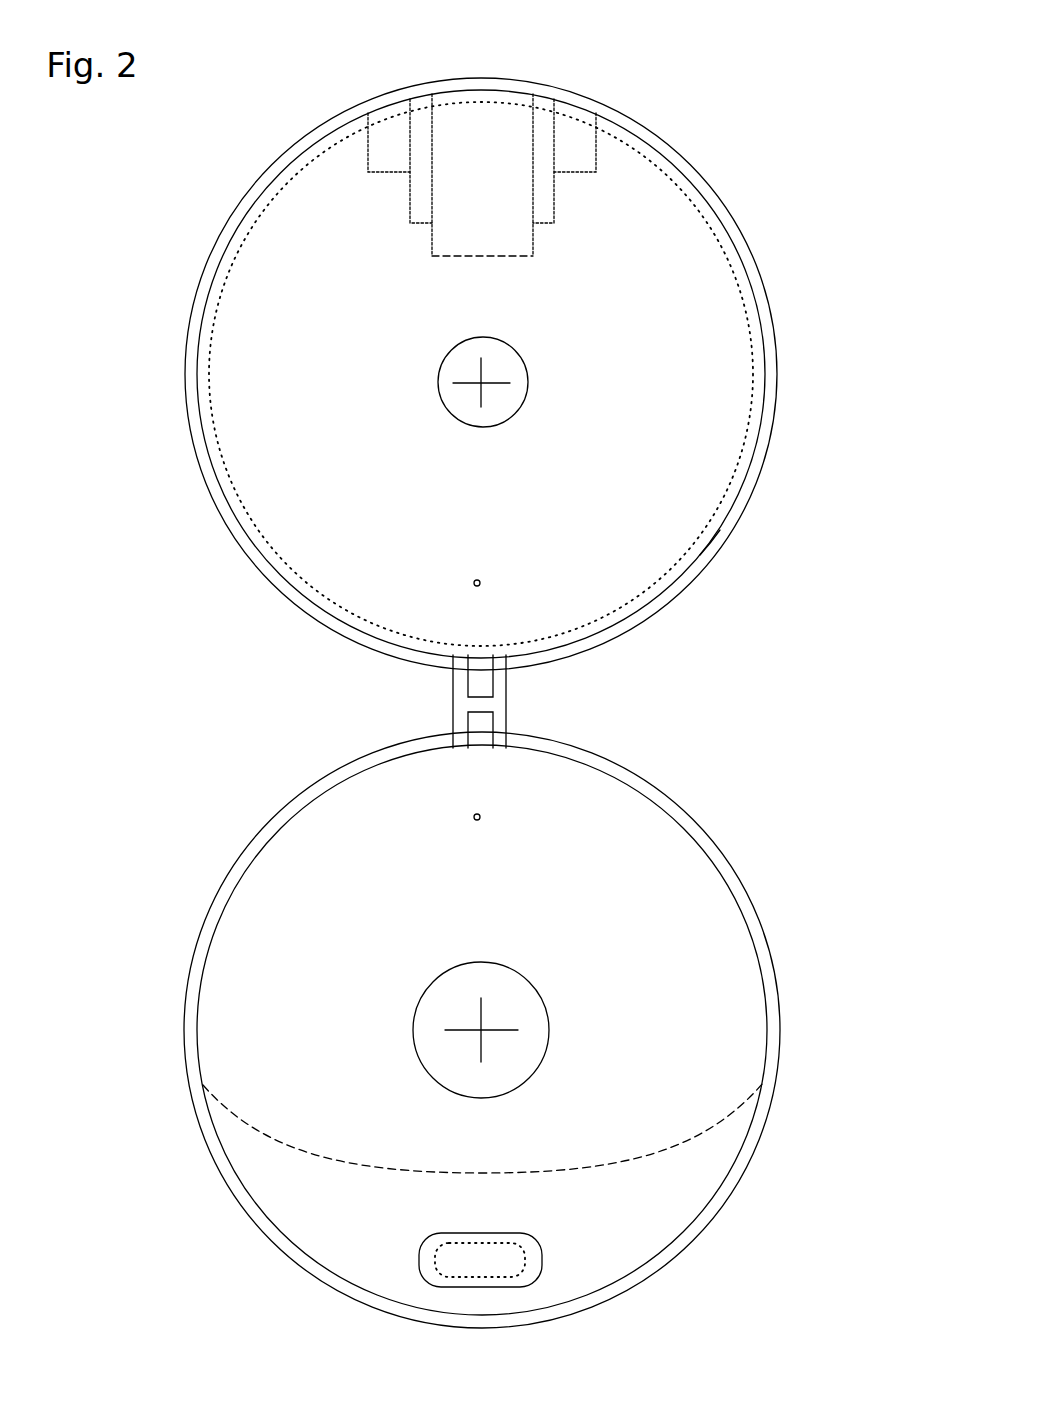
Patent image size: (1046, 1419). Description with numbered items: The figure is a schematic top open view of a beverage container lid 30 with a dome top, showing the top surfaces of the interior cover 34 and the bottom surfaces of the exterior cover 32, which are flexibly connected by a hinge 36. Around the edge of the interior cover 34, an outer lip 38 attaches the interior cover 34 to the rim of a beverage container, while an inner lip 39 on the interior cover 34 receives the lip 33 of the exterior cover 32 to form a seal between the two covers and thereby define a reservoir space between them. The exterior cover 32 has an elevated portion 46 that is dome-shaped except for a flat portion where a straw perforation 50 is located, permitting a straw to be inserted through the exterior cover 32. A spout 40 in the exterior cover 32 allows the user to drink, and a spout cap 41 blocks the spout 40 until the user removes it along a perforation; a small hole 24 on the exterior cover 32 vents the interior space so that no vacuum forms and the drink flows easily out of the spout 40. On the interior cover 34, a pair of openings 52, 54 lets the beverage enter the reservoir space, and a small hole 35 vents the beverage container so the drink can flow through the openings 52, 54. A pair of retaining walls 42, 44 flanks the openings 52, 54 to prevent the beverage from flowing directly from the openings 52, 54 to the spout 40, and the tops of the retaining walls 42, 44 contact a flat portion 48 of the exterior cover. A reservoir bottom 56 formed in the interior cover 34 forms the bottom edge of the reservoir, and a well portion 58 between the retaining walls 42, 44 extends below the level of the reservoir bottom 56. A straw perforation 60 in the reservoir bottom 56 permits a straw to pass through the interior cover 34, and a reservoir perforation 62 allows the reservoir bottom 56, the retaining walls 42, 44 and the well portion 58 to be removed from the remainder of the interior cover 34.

The small hole 24 is at (474, 815).
The beverage container lid 30 is at (780, 118).
The exterior cover 32 is at (685, 1029).
The lip 33 is at (771, 945).
The interior cover 34 is at (641, 489).
The small hole 35 is at (480, 585).
The hinge 36 is at (500, 702).
The outer lip 38 is at (772, 432).
The inner lip 39 is at (718, 532).
The spout 40 is at (428, 1262).
The spout cap 41 is at (513, 1262).
The retaining wall 42 is at (424, 120).
The retaining wall 44 is at (541, 128).
The elevated portion 46 is at (327, 942).
The flat portion 48 is at (627, 1220).
The straw perforation 50 is at (483, 1028).
The opening 52 is at (387, 127).
The opening 54 is at (577, 135).
The reservoir bottom 56 is at (310, 415).
The well portion 58 is at (476, 135).
The straw perforation 60 is at (470, 387).
The reservoir perforation 62 is at (745, 292).